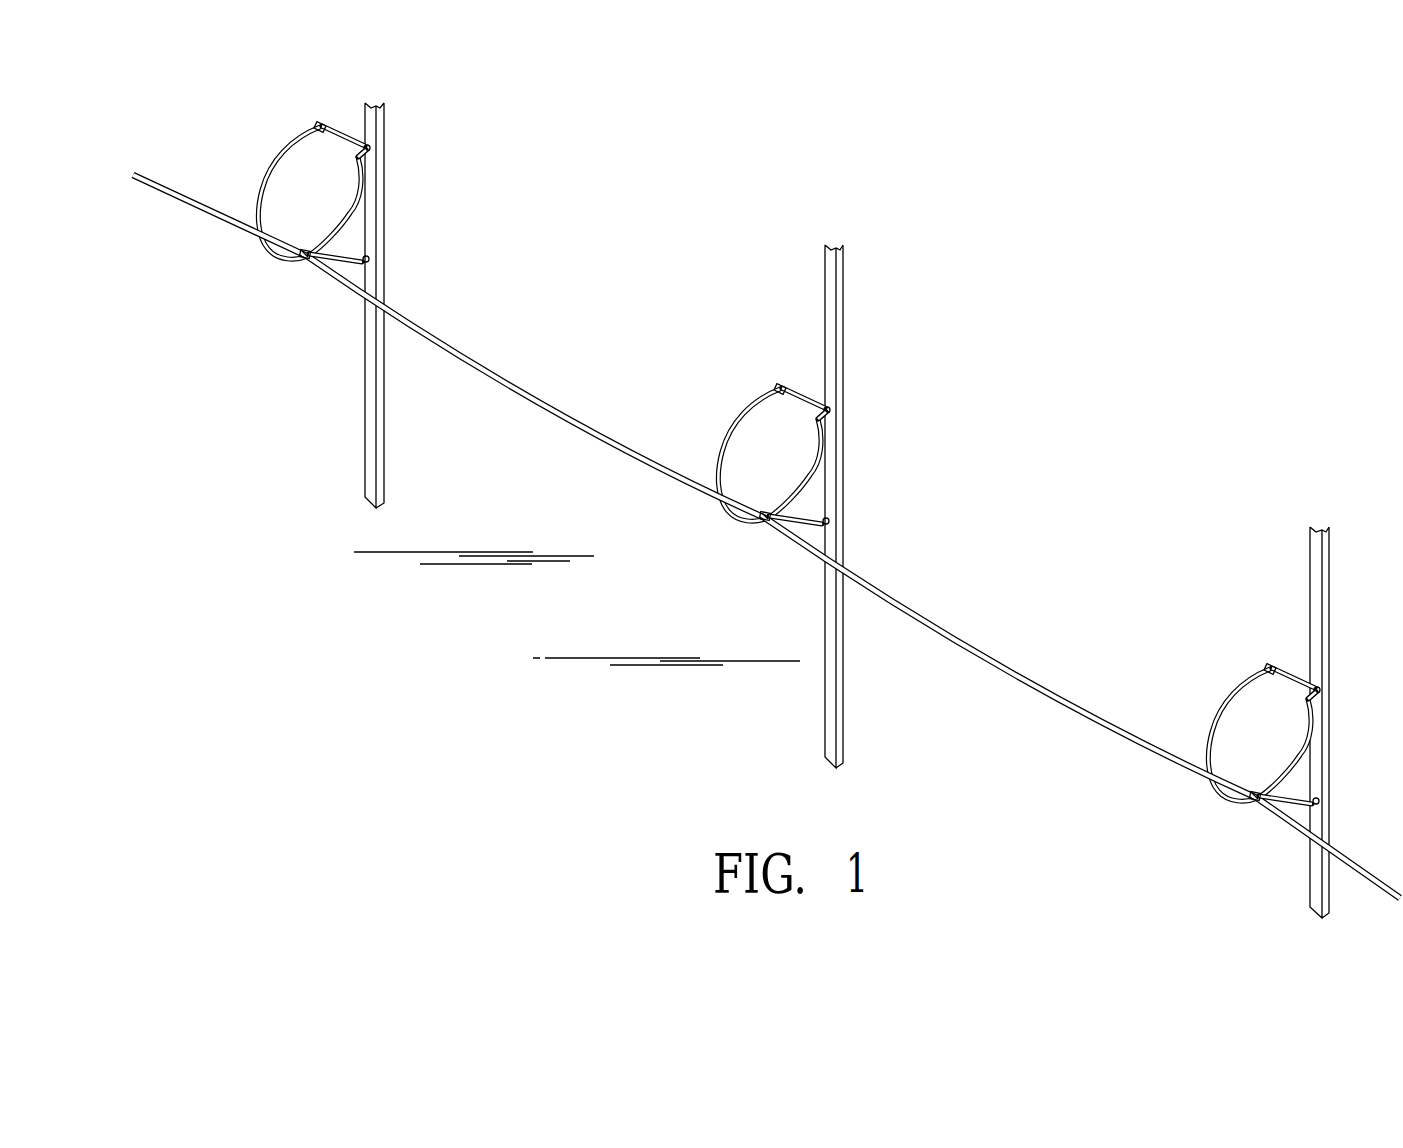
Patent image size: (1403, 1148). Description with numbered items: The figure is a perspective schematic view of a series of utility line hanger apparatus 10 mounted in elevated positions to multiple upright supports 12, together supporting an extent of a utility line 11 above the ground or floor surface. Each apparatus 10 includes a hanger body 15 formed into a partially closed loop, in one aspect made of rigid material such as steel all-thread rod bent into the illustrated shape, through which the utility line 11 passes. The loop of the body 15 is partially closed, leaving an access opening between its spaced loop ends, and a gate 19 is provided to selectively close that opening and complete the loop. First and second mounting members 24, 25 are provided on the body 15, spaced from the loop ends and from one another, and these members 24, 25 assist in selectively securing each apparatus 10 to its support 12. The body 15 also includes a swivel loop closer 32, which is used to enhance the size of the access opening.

The utility line hanger apparatus 10 is at (772, 450).
The utility line 11 is at (495, 372).
The upright support 12 is at (385, 425).
The hanger body 15 is at (753, 477).
The gate 19 is at (774, 373).
The first mounting member 24 is at (805, 443).
The second mounting member 25 is at (794, 548).
The swivel loop closer 32 is at (838, 383).